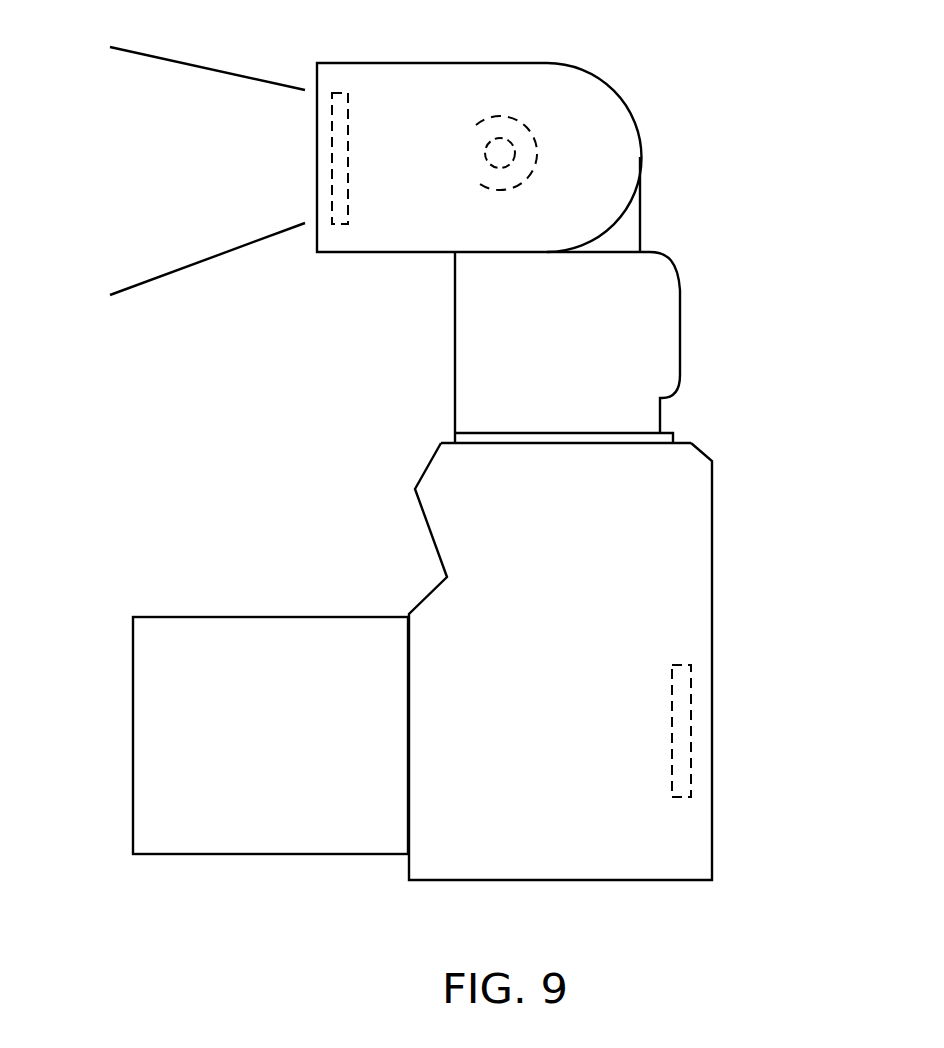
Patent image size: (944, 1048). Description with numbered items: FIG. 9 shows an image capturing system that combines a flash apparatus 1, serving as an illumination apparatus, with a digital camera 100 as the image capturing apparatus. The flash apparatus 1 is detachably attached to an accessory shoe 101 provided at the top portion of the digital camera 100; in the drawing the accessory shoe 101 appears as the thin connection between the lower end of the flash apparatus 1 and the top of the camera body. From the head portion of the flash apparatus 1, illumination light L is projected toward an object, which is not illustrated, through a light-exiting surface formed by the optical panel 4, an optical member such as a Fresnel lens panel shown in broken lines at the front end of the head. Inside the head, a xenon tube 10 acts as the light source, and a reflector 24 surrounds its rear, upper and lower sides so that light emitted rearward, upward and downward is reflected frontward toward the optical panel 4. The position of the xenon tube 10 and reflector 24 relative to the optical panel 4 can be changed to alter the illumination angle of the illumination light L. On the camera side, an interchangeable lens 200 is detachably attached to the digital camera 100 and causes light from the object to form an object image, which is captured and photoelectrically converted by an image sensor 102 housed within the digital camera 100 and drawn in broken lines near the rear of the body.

The flash apparatus 1 is at (673, 263).
The optical panel 4 is at (348, 120).
The xenon tube 10 is at (500, 140).
The reflector 24 is at (538, 153).
The illumination light L is at (215, 260).
The digital camera 100 is at (712, 547).
The accessory shoe 101 is at (675, 438).
The image sensor 102 is at (691, 731).
The interchangeable lens 200 is at (203, 617).